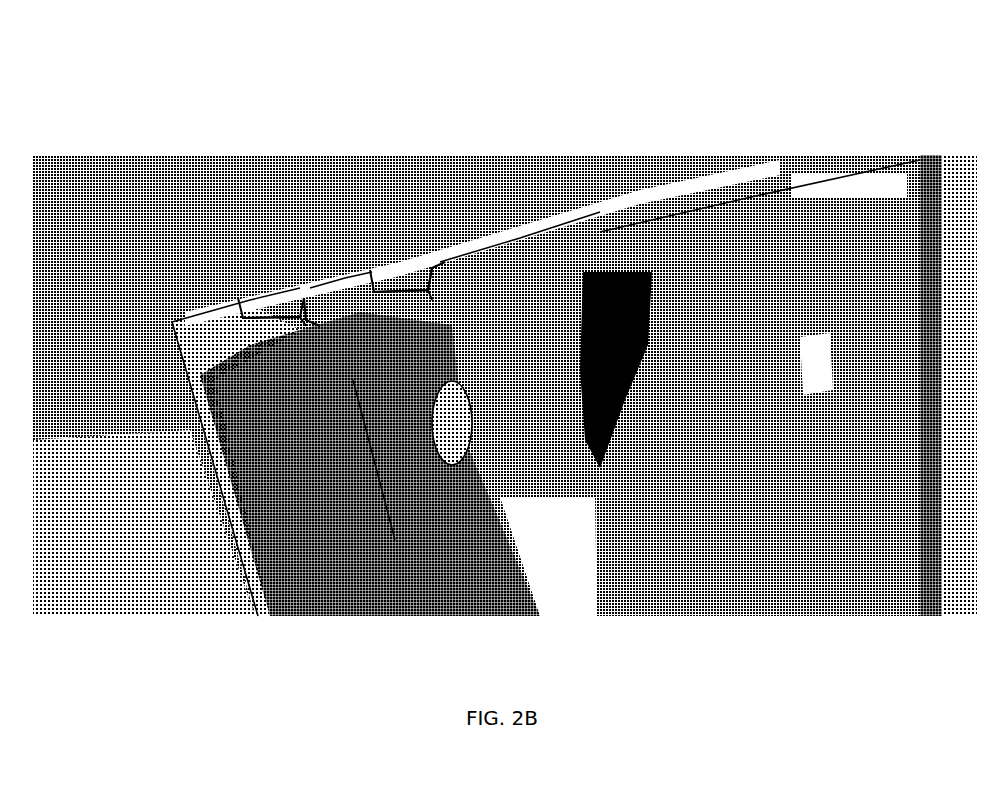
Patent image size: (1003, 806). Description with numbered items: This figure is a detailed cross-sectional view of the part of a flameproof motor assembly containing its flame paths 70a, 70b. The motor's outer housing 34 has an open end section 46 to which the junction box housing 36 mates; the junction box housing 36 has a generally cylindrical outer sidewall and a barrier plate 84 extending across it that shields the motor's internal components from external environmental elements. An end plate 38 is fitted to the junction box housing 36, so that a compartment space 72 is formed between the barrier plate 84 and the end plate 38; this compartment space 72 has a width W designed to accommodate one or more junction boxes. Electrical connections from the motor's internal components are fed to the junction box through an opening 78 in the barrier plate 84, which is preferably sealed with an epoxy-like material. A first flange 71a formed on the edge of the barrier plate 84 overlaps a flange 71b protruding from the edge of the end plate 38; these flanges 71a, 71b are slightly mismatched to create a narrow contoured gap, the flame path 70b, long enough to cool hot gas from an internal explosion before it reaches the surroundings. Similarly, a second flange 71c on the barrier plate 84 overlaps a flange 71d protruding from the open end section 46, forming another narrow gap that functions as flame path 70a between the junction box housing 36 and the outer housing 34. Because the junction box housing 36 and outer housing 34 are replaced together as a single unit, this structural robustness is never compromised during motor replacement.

The outer housing 34 is at (675, 227).
The junction box housing 36 is at (343, 273).
The end plate 38 is at (197, 313).
The open end section 46 is at (508, 227).
The flame path 70a is at (373, 275).
The flame path 70b is at (248, 310).
The first flange 71a is at (285, 307).
The flange 71b is at (278, 328).
The second flange 71c is at (417, 312).
The flange 71d is at (417, 283).
The compartment space 72 is at (313, 597).
The opening 78 is at (465, 440).
The barrier plate 84 is at (458, 528).
The width W is at (253, 540).